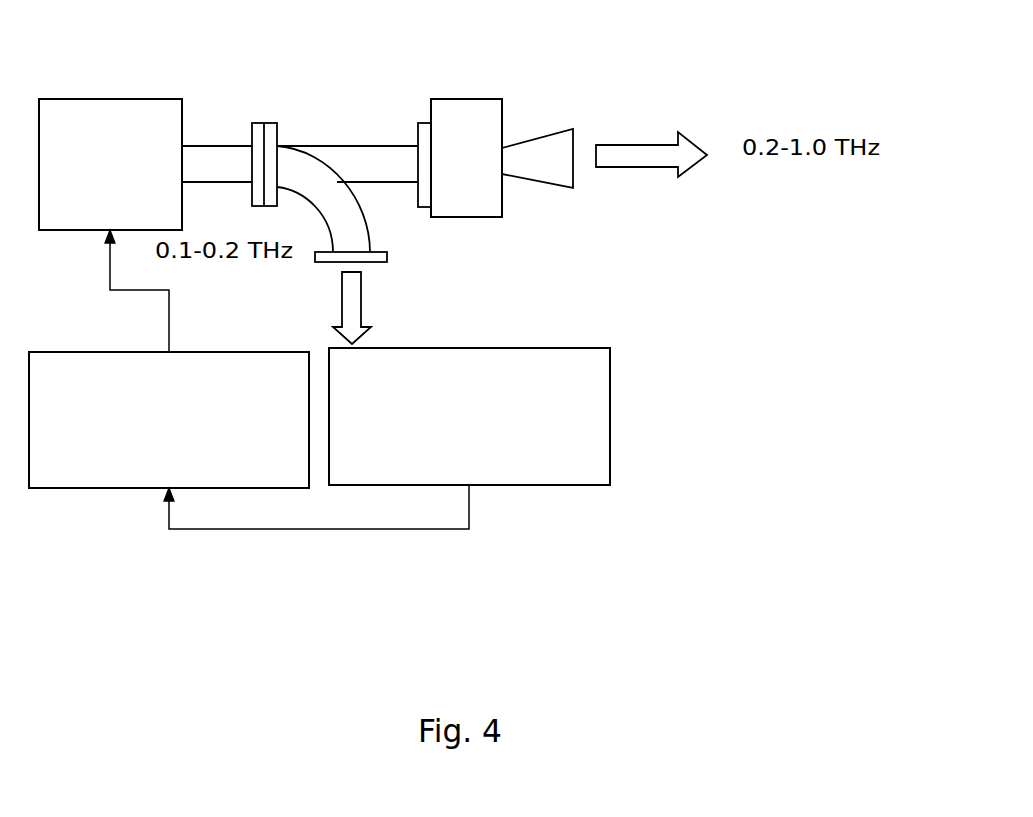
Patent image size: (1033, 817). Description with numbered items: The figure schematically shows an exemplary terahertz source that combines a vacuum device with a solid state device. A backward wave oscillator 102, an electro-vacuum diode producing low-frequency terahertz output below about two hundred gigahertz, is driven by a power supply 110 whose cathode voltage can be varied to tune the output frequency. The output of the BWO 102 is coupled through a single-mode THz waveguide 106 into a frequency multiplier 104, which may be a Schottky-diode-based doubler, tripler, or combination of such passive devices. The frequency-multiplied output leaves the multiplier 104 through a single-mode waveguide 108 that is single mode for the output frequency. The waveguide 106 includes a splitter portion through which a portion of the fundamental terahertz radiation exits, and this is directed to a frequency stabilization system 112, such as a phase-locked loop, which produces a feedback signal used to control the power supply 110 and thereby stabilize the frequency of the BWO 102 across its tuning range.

The backward wave oscillator 102 is at (78, 161).
The frequency multiplier 104 is at (460, 148).
The single-mode THz waveguide 106 is at (361, 167).
The single-mode waveguide 108 is at (537, 160).
The power supply 110 is at (147, 419).
The frequency stabilization system 112 is at (447, 416).